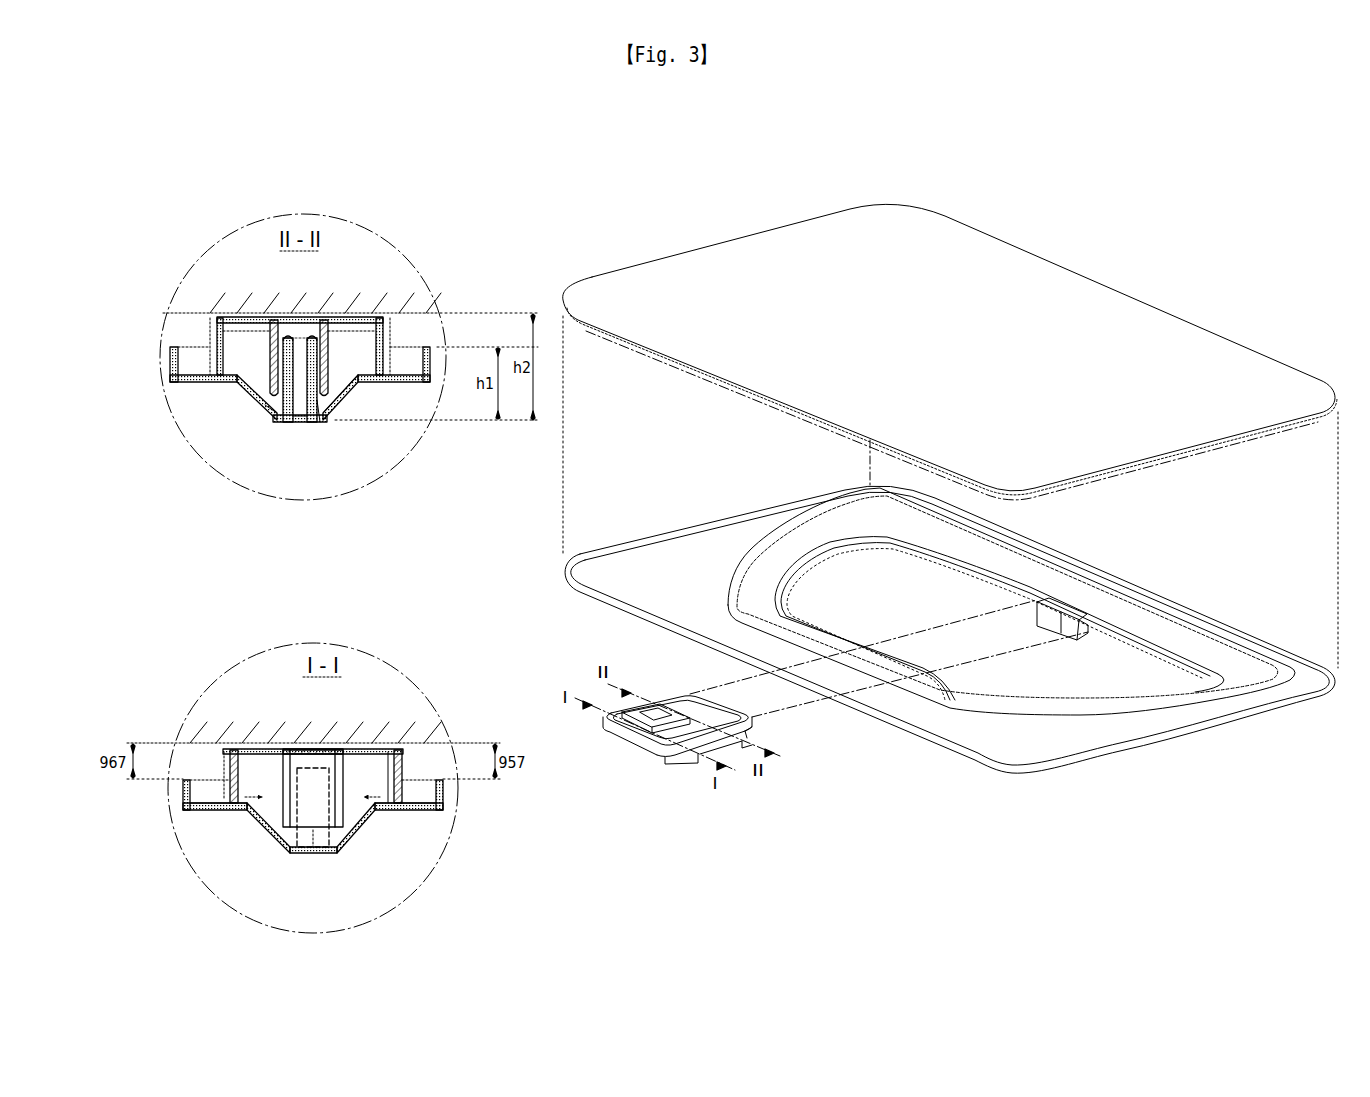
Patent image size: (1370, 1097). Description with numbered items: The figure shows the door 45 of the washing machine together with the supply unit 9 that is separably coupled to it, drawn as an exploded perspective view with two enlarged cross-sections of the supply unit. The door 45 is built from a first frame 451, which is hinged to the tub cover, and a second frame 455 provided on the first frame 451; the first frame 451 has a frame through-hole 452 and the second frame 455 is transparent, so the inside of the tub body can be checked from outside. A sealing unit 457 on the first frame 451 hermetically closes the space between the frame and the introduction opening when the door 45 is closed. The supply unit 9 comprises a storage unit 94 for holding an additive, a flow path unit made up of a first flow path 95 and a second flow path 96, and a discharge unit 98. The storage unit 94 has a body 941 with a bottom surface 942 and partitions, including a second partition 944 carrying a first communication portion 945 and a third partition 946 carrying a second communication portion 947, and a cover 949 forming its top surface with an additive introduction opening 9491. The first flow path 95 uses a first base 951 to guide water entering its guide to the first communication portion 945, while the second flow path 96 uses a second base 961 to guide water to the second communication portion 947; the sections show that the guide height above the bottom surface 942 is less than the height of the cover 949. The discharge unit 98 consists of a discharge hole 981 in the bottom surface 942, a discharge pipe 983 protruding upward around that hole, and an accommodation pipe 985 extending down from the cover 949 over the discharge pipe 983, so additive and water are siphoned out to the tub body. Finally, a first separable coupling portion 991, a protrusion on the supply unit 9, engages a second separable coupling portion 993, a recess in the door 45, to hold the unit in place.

The supply unit 9 is at (603, 660).
The door 45 is at (330, 313).
The storage unit 94 is at (242, 385).
The first flow path 95 is at (407, 369).
The second flow path 96 is at (187, 367).
The discharge unit 98 is at (286, 535).
The body 941 is at (348, 402).
The bottom surface 942 is at (325, 423).
The second partition 944 is at (373, 320).
The first communication portion 945 is at (392, 750).
The third partition 946 is at (233, 318).
The second communication portion 947 is at (235, 750).
The cover 949 is at (342, 321).
The first base 951 is at (360, 793).
The second base 961 is at (200, 802).
The discharge hole 981 is at (298, 423).
The discharge pipe 983 is at (270, 423).
The accommodation pipe 985 is at (272, 352).
The first separable coupling portion 991 is at (754, 720).
The second separable coupling portion 993 is at (1060, 631).
The additive introduction opening 9491 is at (313, 750).
The first frame 451 is at (1243, 701).
The frame through-hole 452 is at (1118, 662).
The second frame 455 is at (1150, 315).
The sealing unit 457 is at (843, 560).